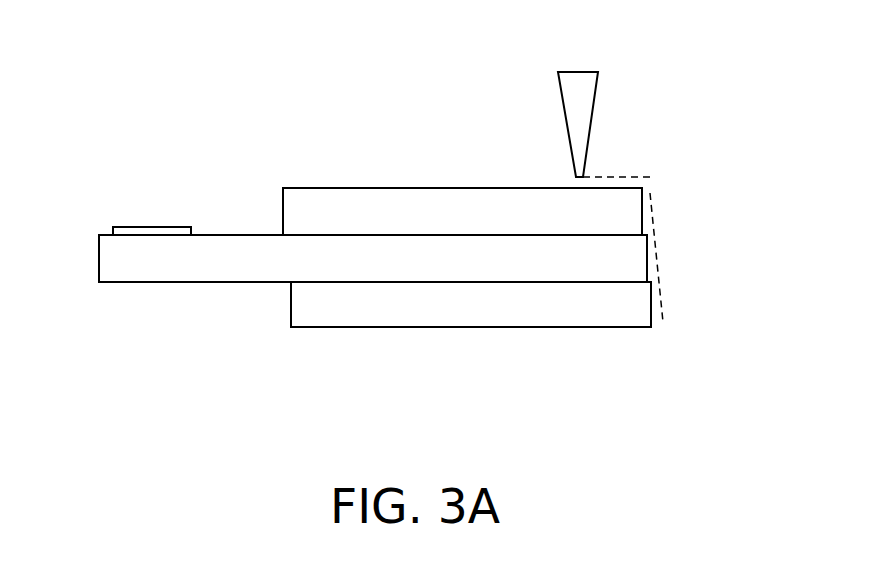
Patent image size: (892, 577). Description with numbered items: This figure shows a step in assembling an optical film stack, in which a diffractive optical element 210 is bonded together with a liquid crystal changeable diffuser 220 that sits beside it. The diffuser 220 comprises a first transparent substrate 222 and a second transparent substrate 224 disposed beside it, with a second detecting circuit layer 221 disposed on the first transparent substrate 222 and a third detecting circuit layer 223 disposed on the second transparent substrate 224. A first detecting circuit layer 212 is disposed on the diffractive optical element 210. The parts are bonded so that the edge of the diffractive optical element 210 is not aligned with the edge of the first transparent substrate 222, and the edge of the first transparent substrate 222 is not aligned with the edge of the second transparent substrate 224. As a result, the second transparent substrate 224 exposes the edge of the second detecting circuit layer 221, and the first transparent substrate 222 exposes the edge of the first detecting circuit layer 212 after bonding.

The diffractive optical element 210 is at (433, 312).
The first detecting circuit layer 212 is at (647, 282).
The liquid crystal changeable diffuser 220 is at (373, 290).
The second detecting circuit layer 221 is at (641, 235).
The first transparent substrate 222 is at (178, 264).
The third detecting circuit layer 223 is at (627, 188).
The second transparent substrate 224 is at (301, 209).